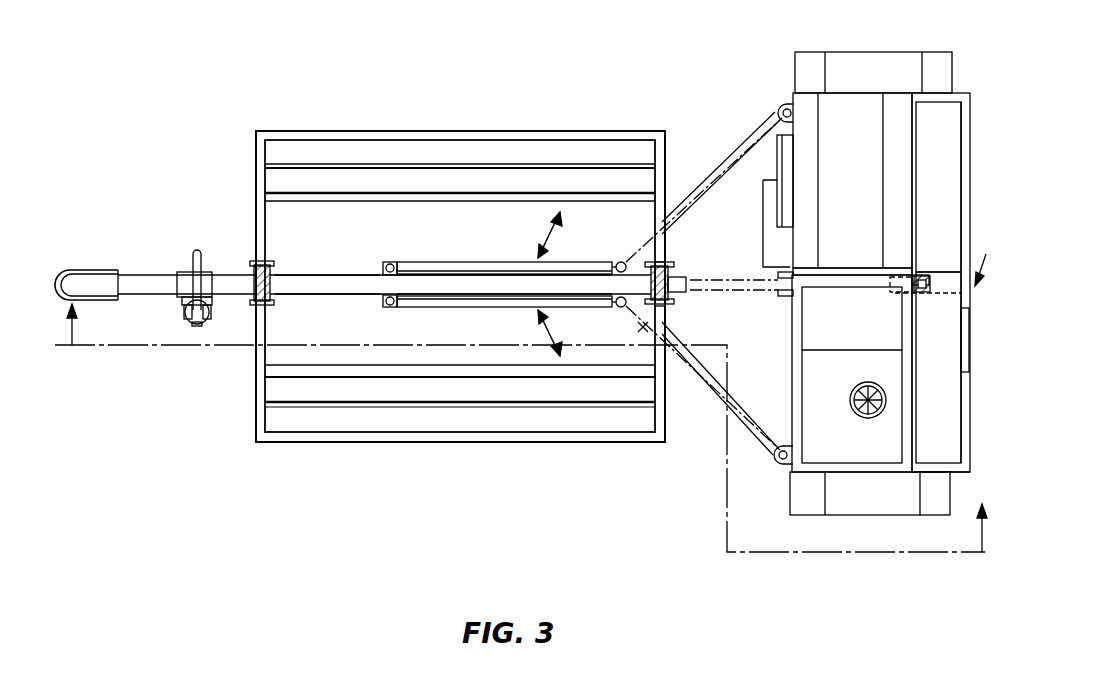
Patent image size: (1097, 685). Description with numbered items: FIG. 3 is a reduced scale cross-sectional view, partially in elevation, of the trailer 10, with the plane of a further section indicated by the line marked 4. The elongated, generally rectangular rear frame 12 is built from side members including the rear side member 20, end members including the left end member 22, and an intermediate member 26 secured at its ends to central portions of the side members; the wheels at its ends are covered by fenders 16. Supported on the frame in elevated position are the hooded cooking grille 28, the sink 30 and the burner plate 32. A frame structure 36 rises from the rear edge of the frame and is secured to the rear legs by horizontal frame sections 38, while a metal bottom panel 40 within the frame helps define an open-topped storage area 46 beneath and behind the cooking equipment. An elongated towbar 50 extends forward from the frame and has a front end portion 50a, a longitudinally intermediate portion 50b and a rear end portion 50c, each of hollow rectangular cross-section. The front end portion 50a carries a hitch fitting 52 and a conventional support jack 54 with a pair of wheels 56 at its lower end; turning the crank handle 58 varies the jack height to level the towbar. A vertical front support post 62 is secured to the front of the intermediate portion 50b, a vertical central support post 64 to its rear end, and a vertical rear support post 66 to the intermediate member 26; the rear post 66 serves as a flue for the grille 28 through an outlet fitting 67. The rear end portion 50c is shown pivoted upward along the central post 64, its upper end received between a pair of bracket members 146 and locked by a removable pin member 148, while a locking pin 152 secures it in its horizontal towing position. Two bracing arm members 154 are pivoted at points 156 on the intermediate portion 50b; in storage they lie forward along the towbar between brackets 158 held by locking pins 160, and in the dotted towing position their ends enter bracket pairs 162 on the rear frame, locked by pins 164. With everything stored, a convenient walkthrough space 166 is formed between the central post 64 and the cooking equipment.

The trailer 10 is at (458, 66).
The section line 4- 4 is at (523, 443).
The rear frame 12 is at (990, 258).
The fenders 16 is at (838, 52).
The rear side member 20 is at (962, 324).
The left end member 22 is at (962, 93).
The intermediate member 26 is at (938, 272).
The hooded cooking grille 28 is at (852, 184).
The sink 30 is at (962, 346).
The burner plate 32 is at (868, 419).
The frame structure 36 is at (966, 442).
The horizontal frame sections 38 is at (945, 476).
The metal bottom panel 40 is at (938, 187).
The storage area 46 is at (945, 168).
The towbar 50 is at (345, 273).
The front end portion 50a is at (168, 250).
The longitudinally intermediate portion 50b is at (290, 298).
The rear end portion 50c is at (686, 282).
The hitch fitting 52 is at (82, 270).
The support jack 54 is at (190, 322).
The wheels 56 is at (180, 306).
The crank handle 58 is at (196, 252).
The vertical front support post 62 is at (272, 282).
The vertical central support post 64 is at (654, 262).
The vertical rear support post 66 is at (930, 296).
The outlet fitting 67 is at (892, 296).
The bracket members 146 is at (674, 266).
The removable pin member 148 is at (648, 330).
The locking pin 152 is at (792, 270).
The bracing arm members 154 is at (452, 265).
The pivot points 156 is at (616, 262).
The brackets 158 is at (390, 262).
The locking pins 160 is at (405, 284).
The bracket pairs 162 is at (785, 106).
The pins 164 is at (796, 115).
The walkthrough space 166 is at (742, 185).